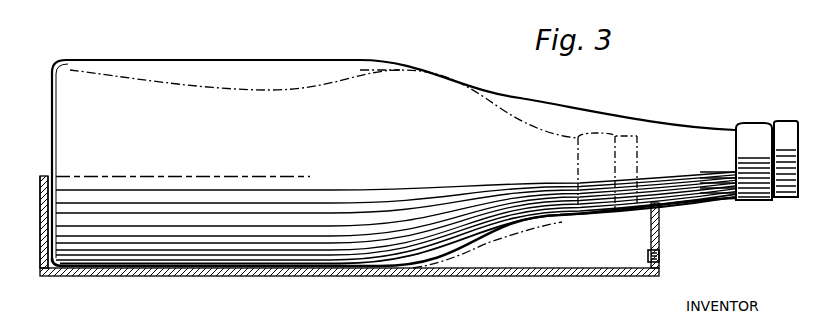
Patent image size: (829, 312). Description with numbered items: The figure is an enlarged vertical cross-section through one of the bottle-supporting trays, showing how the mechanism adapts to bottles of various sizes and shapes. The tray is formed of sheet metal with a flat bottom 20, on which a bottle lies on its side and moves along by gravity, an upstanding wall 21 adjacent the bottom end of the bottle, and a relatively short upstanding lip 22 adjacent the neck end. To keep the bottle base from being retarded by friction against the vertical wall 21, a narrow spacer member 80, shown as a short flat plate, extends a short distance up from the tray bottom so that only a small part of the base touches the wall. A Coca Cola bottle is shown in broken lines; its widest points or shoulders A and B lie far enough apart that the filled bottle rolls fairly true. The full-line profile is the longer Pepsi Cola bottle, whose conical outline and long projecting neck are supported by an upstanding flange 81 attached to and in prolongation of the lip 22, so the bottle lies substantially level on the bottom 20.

The flat bottom 20 is at (478, 284).
The upstanding wall 21 is at (42, 177).
The upstanding lip 22 is at (648, 255).
The spacer member 80 is at (50, 277).
The upstanding flange 81 is at (660, 213).
The shoulder A is at (70, 70).
The shoulder B is at (428, 70).